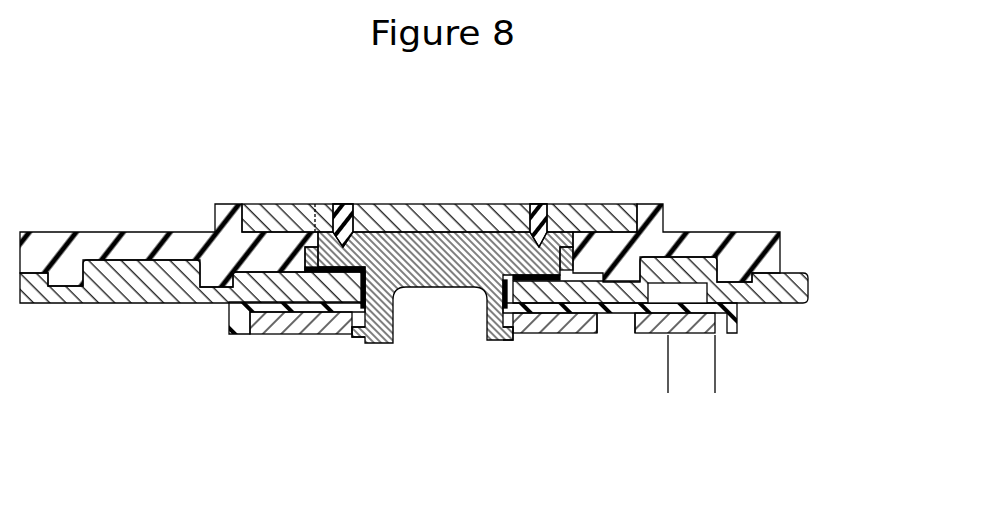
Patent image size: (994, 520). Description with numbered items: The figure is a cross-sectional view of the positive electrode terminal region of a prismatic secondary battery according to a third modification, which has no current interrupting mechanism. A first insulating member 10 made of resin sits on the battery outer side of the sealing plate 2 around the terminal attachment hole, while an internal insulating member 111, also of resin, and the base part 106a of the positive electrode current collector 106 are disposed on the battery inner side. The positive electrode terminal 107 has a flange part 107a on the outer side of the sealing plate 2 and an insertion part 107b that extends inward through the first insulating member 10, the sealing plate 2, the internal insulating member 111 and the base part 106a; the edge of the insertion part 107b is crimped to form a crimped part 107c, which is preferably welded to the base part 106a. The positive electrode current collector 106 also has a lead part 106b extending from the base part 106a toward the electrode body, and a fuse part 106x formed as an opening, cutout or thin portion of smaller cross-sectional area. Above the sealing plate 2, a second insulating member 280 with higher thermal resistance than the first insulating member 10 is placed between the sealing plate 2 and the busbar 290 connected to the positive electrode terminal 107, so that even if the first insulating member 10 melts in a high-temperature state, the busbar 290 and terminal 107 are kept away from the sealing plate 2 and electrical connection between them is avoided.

The sealing plate 2 is at (790, 288).
The first insulating member 10 is at (316, 236).
The positive electrode current collector 106 is at (845, 378).
The base part 106a is at (577, 322).
The lead part 106b is at (692, 372).
The fuse part 106x is at (618, 332).
The positive electrode terminal 107 is at (378, 245).
The flange part 107a is at (513, 240).
The insertion part 107b is at (397, 312).
The crimped part 107c is at (498, 343).
The internal insulating member 111 is at (235, 316).
The second insulating member 280 is at (119, 246).
The busbar 290 is at (283, 215).